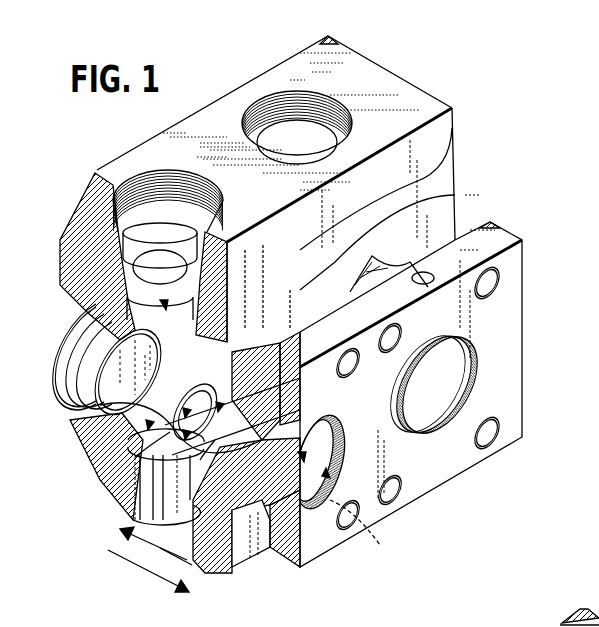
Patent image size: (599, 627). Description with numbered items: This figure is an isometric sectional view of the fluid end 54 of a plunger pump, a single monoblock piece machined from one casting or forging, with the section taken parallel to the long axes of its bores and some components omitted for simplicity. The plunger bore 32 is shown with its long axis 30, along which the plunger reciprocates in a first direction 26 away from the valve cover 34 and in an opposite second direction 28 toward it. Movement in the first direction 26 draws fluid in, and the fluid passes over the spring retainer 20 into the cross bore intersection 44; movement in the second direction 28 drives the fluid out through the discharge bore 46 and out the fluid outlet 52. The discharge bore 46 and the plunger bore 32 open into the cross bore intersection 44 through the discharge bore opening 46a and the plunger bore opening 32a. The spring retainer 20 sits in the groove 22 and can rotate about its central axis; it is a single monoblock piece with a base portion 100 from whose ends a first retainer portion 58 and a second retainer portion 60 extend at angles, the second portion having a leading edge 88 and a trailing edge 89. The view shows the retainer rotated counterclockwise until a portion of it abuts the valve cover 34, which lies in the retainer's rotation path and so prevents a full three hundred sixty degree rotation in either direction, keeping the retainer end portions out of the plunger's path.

The fluid end 54 is at (210, 62).
The first retainer portion 58 is at (450, 148).
The groove 22 is at (455, 195).
The fluid outlet 52 is at (96, 187).
The discharge bore 46 is at (80, 213).
The discharge bore opening 46a is at (100, 240).
The valve cover 34 is at (62, 358).
The plunger bore opening 32a is at (78, 396).
The spring retainer 20 is at (76, 431).
The trailing edge 89 is at (92, 458).
The second retainer portion 60 is at (114, 486).
The leading edge 88 is at (137, 540).
The first direction 26 is at (114, 560).
The second direction 28 is at (190, 566).
The base portion 100 is at (244, 565).
The long axis of the plunger bore 30 is at (320, 505).
The plunger bore 32 is at (437, 567).
The cross bore intersection 44 is at (337, 451).